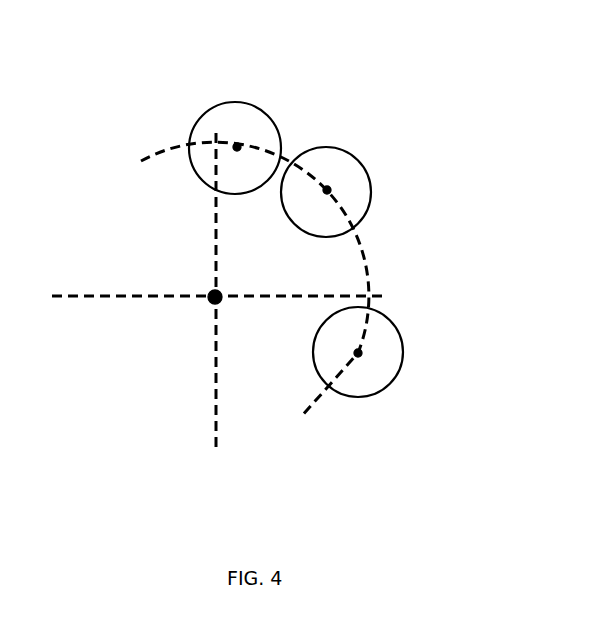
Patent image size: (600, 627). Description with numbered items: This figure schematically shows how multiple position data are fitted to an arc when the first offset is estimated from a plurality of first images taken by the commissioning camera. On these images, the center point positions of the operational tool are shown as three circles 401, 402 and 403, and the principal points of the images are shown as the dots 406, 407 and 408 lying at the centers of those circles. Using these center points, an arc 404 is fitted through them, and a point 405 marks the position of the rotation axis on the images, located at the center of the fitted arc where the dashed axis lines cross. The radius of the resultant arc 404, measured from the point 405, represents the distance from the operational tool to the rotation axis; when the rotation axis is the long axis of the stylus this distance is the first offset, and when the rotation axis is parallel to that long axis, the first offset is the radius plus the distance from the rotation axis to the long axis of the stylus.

The center point position of the operational tool 401 is at (260, 112).
The center point position of the operational tool 402 is at (370, 180).
The center point position of the operational tool 403 is at (407, 358).
The arc 404 is at (367, 250).
The point representing the position of the rotation axis 405 is at (207, 303).
The principal point 406 is at (233, 143).
The principal point 407 is at (330, 186).
The principal point 408 is at (361, 358).